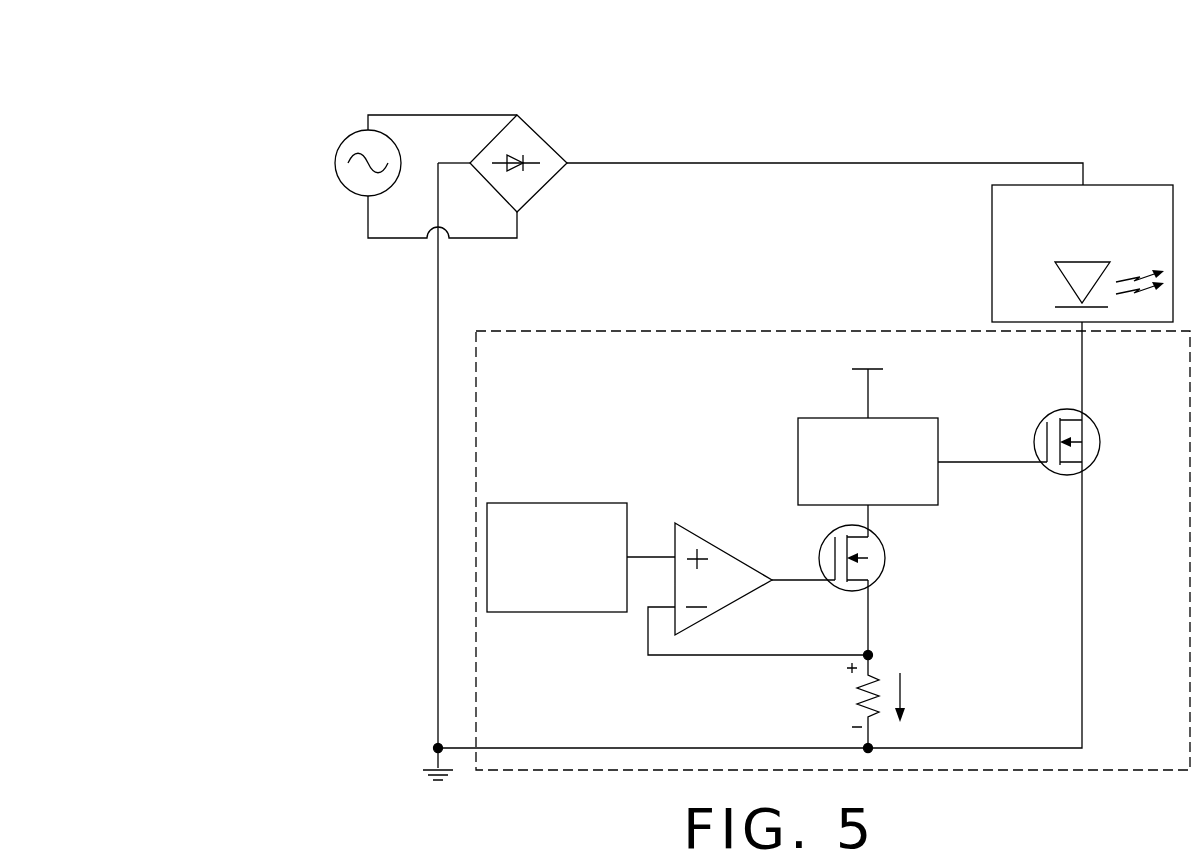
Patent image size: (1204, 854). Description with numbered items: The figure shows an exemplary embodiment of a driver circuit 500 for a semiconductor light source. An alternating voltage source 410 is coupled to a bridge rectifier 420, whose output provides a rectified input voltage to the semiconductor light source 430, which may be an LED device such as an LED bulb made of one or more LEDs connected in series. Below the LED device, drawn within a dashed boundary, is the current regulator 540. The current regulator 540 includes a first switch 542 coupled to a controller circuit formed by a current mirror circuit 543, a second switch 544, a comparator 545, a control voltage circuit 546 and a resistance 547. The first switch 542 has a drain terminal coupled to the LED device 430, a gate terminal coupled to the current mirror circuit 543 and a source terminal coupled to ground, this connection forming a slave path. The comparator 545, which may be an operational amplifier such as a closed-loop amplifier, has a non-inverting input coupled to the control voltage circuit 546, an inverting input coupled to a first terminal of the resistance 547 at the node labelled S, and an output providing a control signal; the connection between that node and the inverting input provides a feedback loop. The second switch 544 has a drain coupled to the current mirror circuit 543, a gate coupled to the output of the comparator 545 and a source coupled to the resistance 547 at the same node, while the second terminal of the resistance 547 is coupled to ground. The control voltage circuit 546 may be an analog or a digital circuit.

The circuit 500 is at (324, 58).
The alternating voltage source 410 is at (336, 163).
The bridge rectifier 420 is at (543, 137).
The semiconductor light source 430 is at (992, 208).
The current regulator 540 is at (613, 330).
The first switch 542 is at (1100, 437).
The current mirror circuit 543 is at (888, 418).
The second switch 544 is at (885, 552).
The comparator 545 is at (717, 540).
The control voltage circuit 546 is at (580, 503).
The resistance 547 is at (853, 695).